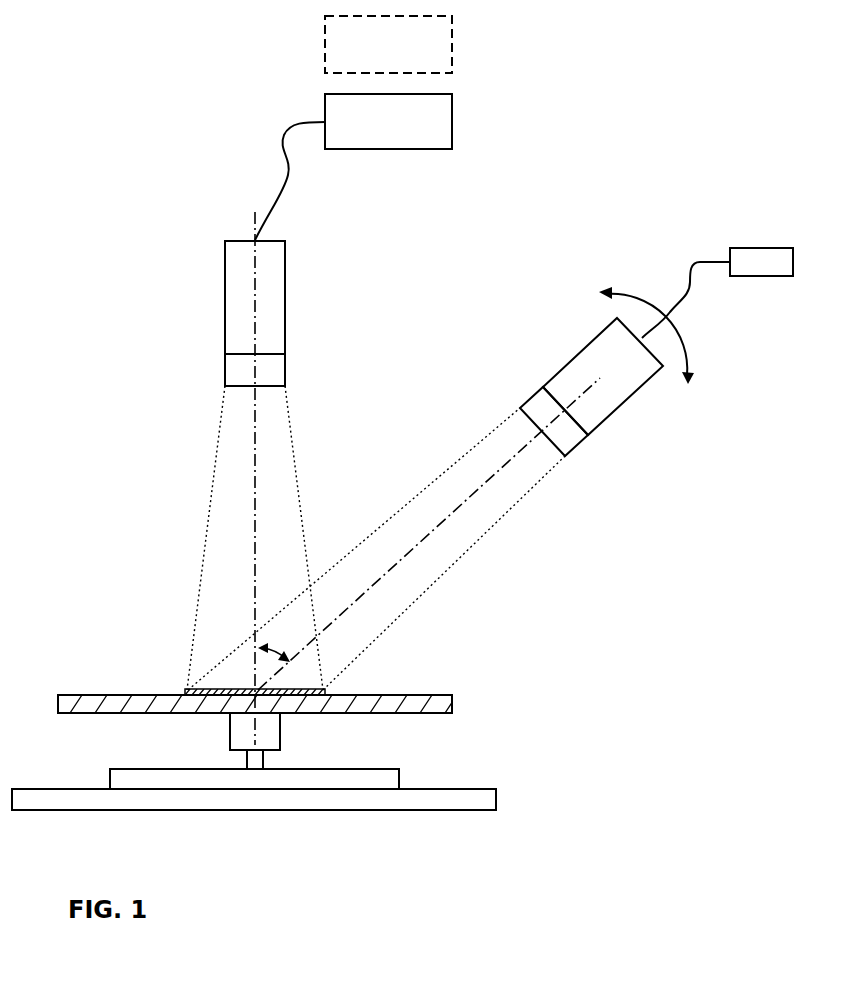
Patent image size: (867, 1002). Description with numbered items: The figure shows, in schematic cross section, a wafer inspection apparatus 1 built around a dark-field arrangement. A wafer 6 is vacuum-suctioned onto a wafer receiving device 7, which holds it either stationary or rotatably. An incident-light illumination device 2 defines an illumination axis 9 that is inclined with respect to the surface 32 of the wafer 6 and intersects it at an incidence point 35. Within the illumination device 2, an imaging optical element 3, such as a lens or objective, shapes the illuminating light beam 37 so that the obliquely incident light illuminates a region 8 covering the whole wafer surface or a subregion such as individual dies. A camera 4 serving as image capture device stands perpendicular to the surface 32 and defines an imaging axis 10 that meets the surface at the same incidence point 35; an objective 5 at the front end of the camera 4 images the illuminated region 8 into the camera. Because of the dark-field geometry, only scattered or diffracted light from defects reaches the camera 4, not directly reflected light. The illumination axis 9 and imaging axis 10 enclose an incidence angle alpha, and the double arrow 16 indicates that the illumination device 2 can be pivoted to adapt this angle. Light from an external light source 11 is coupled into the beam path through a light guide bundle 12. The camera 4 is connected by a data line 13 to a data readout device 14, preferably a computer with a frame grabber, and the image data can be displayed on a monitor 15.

The wafer inspection apparatus 1 is at (131, 320).
The incident-light illumination device 2 is at (612, 400).
The imaging optical element 3 is at (572, 440).
The camera 4 is at (273, 295).
The objective 5 is at (273, 372).
The wafer 6 is at (452, 704).
The wafer receiving device 7 is at (270, 731).
The illuminated region 8 is at (205, 690).
The illumination axis 9 is at (435, 527).
The imaging axis 10 is at (255, 447).
The external light source 11 is at (762, 248).
The light guide bundle 12 is at (700, 261).
The data line 13 is at (284, 165).
The data readout device 14 is at (452, 125).
The monitor 15 is at (452, 40).
The double arrow 16 is at (630, 293).
The surface of wafer 32 is at (86, 691).
The incidence point 35 is at (253, 688).
The illuminating light beam 37 is at (517, 502).